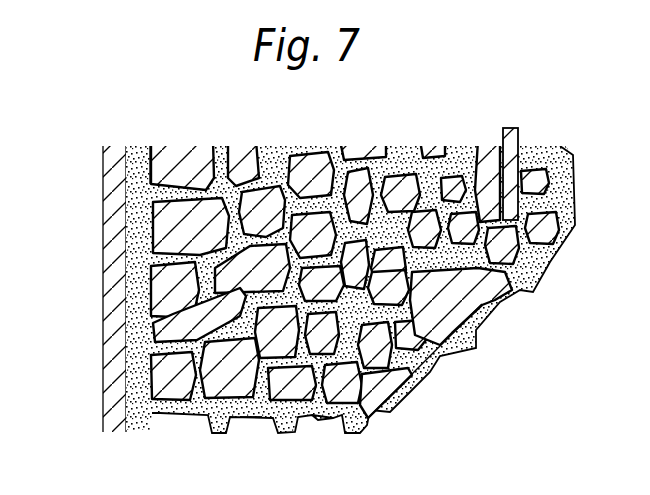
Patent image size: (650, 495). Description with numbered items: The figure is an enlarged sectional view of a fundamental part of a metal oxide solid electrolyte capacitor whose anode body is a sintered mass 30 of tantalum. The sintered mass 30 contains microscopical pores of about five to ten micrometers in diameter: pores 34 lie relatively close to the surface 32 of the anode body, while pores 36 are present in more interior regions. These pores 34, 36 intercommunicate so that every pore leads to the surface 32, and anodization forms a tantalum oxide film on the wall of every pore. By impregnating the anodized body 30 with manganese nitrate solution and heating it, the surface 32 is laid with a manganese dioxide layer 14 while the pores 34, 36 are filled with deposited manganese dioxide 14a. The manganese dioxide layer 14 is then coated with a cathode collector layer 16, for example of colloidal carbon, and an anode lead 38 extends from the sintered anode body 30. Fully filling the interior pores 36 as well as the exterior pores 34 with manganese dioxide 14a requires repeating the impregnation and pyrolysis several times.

The manganese dioxide layer 14 is at (146, 150).
The deposited manganese dioxide 14a is at (320, 413).
The cathode collector layer 16 is at (103, 205).
The sintered mass 30 is at (390, 146).
The surface 32 is at (140, 427).
The pores 34 is at (252, 413).
The pores 36 is at (400, 370).
The anode lead 38 is at (522, 140).